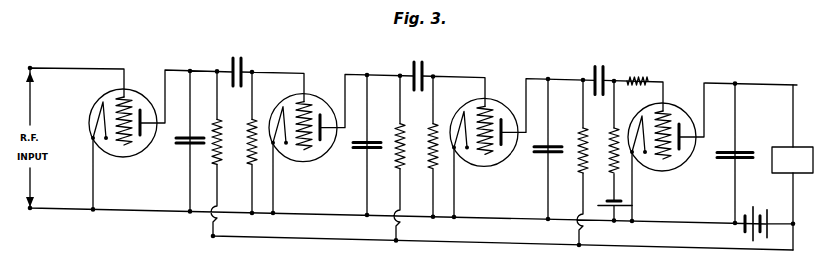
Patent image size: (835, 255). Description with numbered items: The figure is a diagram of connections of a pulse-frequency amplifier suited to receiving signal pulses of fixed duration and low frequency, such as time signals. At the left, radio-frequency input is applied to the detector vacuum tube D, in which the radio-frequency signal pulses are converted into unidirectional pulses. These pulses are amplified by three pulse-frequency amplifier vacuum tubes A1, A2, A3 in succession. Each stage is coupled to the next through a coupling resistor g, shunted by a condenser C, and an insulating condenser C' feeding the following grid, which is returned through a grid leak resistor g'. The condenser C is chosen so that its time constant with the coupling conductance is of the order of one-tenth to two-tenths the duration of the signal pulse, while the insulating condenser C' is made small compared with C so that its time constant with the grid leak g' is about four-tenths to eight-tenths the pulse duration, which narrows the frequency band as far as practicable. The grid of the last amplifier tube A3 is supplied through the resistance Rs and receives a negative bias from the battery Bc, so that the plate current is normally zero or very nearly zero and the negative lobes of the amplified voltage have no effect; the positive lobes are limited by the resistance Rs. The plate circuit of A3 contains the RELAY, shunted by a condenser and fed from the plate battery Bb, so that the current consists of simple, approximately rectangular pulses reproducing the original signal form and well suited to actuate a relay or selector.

The detector vacuum tube D is at (107, 92).
The pulse-frequency amplifier vacuum tube A1 is at (295, 98).
The pulse-frequency amplifier vacuum tube A2 is at (477, 102).
The pulse-frequency amplifier vacuum tube A3 is at (653, 106).
The condenser C is at (367, 155).
The insulating condenser C' is at (418, 71).
The coupling resistor g is at (405, 153).
The grid leak resistor g' is at (440, 154).
The resistance Rs is at (637, 65).
The battery Bc is at (611, 214).
The plate battery Bb is at (770, 222).
The relay RELAY is at (765, 154).